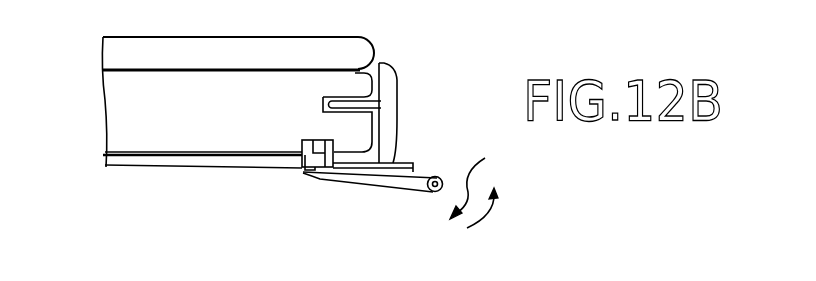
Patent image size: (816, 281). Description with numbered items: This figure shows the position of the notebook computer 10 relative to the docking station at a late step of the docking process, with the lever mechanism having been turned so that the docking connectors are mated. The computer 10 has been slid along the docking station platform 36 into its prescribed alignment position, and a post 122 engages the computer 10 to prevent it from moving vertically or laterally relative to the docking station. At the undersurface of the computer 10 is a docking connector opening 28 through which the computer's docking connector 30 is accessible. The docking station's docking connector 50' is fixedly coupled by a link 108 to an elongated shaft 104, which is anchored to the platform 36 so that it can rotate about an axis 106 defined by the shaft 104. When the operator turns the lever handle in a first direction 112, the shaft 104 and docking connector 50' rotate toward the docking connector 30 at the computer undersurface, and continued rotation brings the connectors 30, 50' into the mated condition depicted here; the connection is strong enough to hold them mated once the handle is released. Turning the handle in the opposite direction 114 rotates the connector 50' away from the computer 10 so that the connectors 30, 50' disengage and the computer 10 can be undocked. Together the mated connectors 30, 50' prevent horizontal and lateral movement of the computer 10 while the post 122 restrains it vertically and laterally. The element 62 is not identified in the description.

The computer 10 is at (191, 37).
The post 122 is at (344, 104).
The slot housing 62 is at (322, 100).
The docking connector opening 28 is at (305, 148).
The docking connector 30 is at (318, 142).
The docking station platform 36 is at (163, 169).
The docking connector 50' is at (291, 190).
The link 108 is at (377, 180).
The elongated shaft 104 is at (440, 176).
The axis 106 is at (435, 192).
The first direction 112 is at (485, 180).
The opposite direction 114 is at (490, 206).